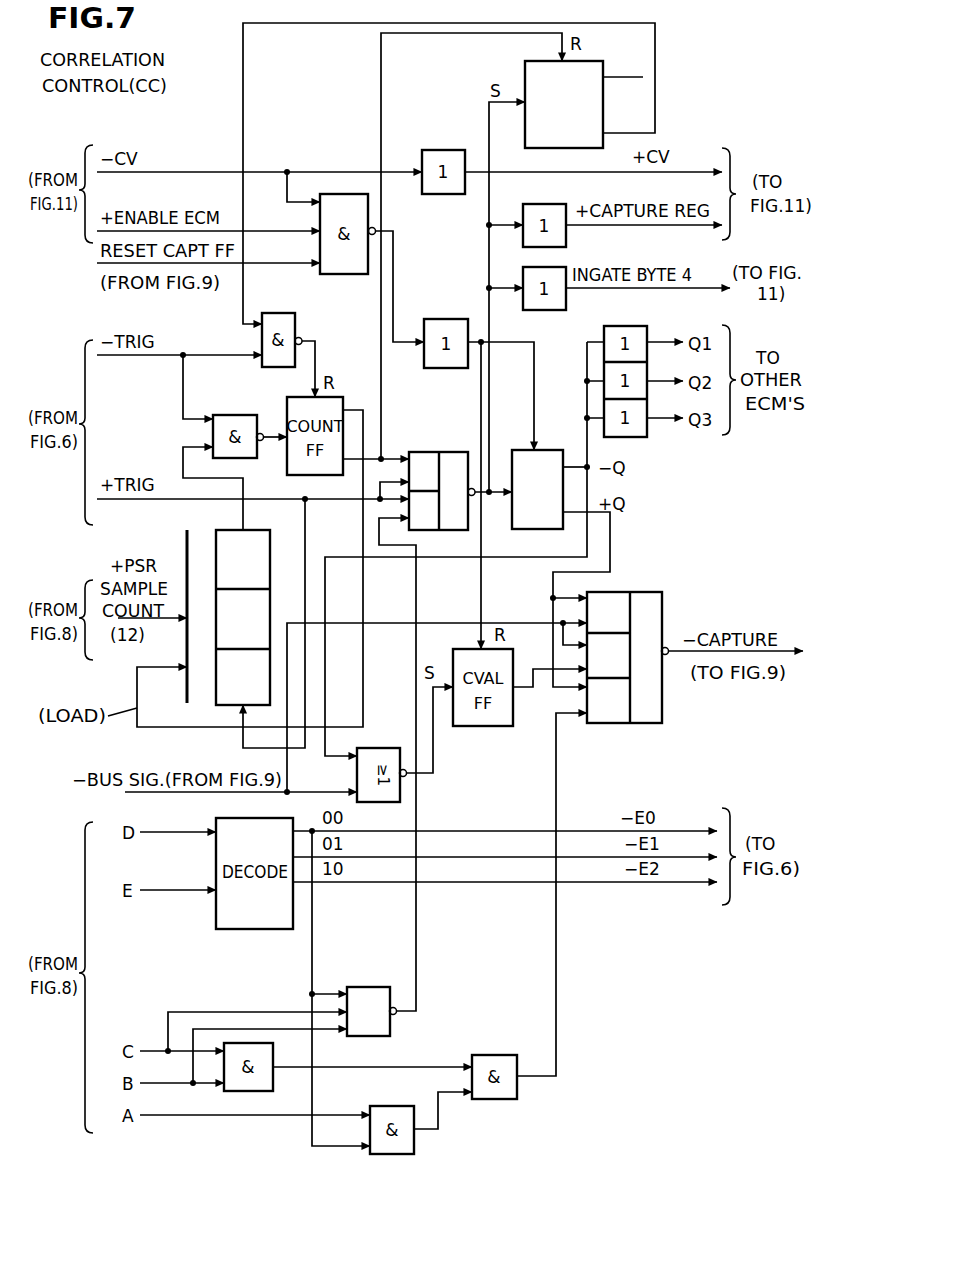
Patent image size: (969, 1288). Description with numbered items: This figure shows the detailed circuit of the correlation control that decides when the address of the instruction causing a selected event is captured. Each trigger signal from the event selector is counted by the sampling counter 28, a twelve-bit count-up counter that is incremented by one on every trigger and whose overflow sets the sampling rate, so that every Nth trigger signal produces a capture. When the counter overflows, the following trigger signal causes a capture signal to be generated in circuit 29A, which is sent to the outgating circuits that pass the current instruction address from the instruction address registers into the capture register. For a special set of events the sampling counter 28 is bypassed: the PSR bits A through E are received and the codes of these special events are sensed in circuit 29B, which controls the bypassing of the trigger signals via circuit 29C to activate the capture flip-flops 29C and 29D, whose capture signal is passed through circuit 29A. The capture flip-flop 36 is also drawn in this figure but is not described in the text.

The capture flip-flop FF2 36 is at (529, 70).
The sampling counter 28 is at (262, 536).
The capture signal circuit 29A is at (629, 588).
The special event sensing circuit 29B is at (372, 987).
The bypass circuit 29C is at (432, 530).
The capture flip-flop 29D is at (545, 529).